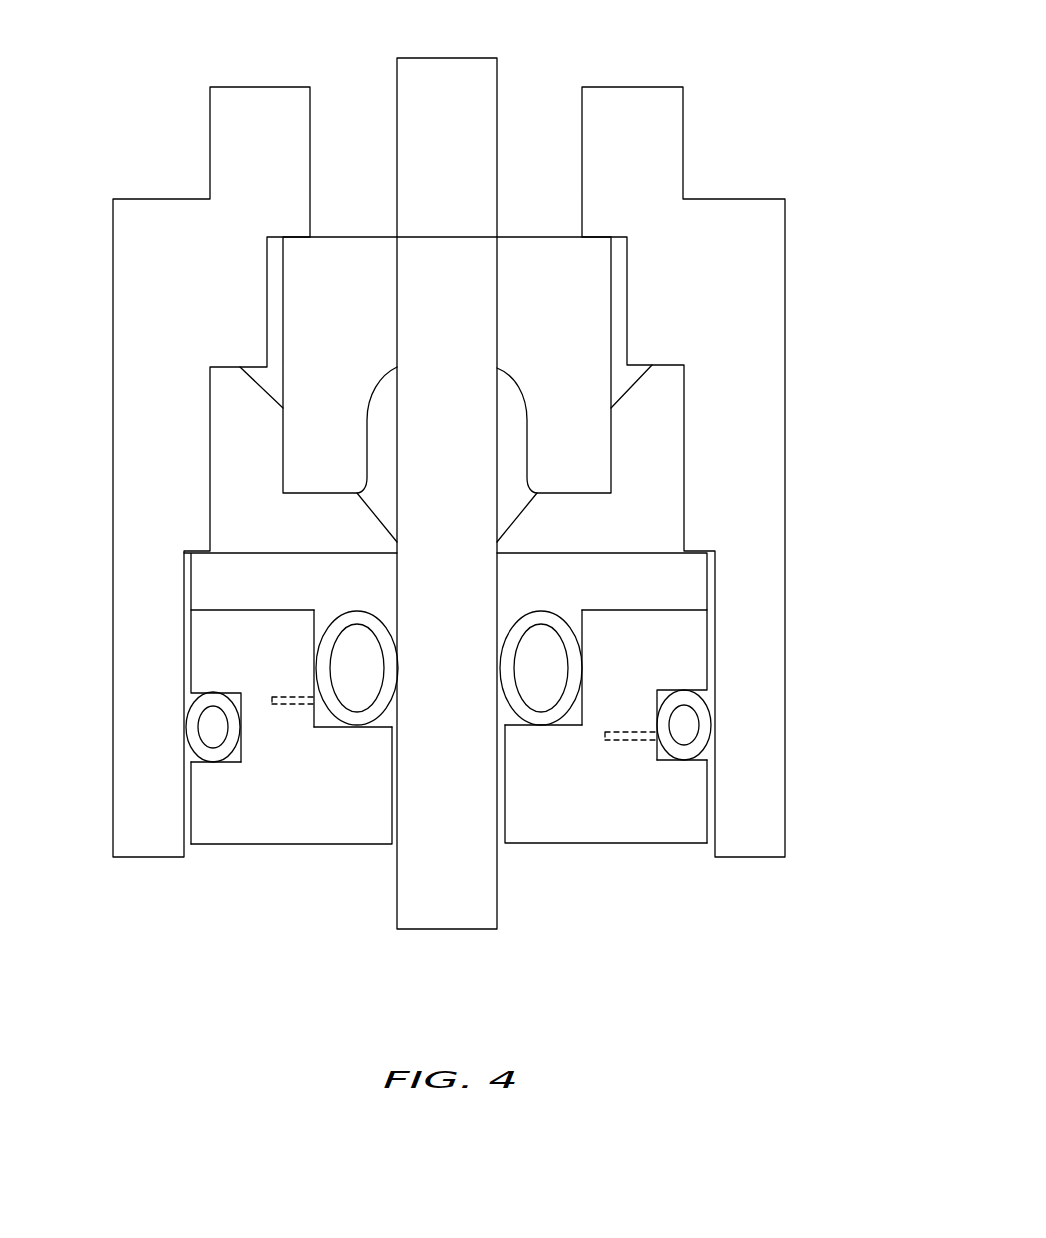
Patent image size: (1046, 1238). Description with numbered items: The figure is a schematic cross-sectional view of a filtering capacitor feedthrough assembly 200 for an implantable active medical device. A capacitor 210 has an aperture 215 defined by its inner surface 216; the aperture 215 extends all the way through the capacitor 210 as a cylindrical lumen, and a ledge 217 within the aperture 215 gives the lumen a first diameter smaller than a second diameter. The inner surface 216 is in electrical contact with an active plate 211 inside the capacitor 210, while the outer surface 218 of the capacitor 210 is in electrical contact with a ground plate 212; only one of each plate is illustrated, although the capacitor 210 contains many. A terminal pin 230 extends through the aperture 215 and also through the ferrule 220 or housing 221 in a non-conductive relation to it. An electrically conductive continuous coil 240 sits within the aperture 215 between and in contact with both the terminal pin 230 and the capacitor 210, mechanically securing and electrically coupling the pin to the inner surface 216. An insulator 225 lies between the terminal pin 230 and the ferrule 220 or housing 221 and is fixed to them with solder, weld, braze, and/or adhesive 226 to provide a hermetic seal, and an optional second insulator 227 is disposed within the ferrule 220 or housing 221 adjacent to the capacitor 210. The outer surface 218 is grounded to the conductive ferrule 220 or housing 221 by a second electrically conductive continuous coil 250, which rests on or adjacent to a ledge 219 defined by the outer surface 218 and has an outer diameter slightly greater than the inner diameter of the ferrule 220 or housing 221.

The filtering capacitor feedthrough assembly 200 is at (752, 44).
The capacitor 210 is at (449, 749).
The active plate 211 is at (272, 706).
The ground plate 212 is at (607, 742).
The aperture 215 is at (512, 858).
The inner surface 216 is at (316, 629).
The ledge 217 is at (339, 727).
The outer surface 218 is at (193, 812).
The ledge 219 is at (233, 762).
The ferrule 220 is at (444, 472).
The housing 221 is at (118, 509).
The insulator 225 is at (512, 235).
The solder, weld, braze, and/or adhesive 226 is at (625, 382).
The second insulator 227 is at (702, 579).
The terminal pin 230 is at (480, 56).
The electrically conductive continuous coil 240 is at (320, 667).
The electrically conductive continuous coil 250 is at (188, 727).